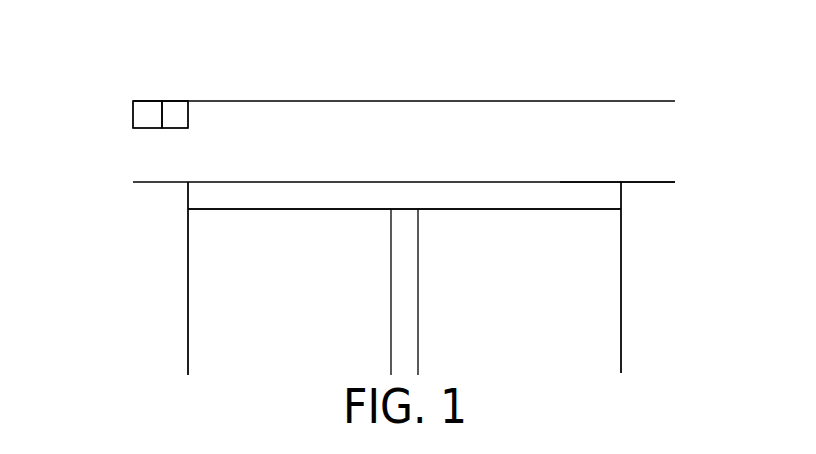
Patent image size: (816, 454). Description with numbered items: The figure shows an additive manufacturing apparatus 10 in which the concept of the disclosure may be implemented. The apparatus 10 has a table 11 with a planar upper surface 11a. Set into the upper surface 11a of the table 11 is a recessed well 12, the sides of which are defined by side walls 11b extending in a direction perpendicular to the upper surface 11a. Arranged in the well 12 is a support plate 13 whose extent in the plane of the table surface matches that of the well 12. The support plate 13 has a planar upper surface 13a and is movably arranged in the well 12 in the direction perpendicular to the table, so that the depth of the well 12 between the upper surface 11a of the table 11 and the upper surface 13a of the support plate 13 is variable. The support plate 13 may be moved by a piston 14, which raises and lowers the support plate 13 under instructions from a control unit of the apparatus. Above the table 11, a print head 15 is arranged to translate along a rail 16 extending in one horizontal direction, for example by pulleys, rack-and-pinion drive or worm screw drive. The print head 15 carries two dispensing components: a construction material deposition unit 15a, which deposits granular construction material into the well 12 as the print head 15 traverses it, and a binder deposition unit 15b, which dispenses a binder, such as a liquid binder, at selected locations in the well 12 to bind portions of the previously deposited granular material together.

The apparatus 10 is at (672, 71).
The table 11 is at (661, 213).
The upper surface 11a is at (656, 178).
The side walls 11b is at (622, 308).
The recessed well 12 is at (591, 176).
The support plate 13 is at (256, 205).
The planar upper surface 13a is at (198, 178).
The piston 14 is at (392, 310).
The print head 15 is at (171, 94).
The construction material deposition unit 15a is at (175, 128).
The binder deposition unit 15b is at (140, 118).
The rail 16 is at (368, 100).